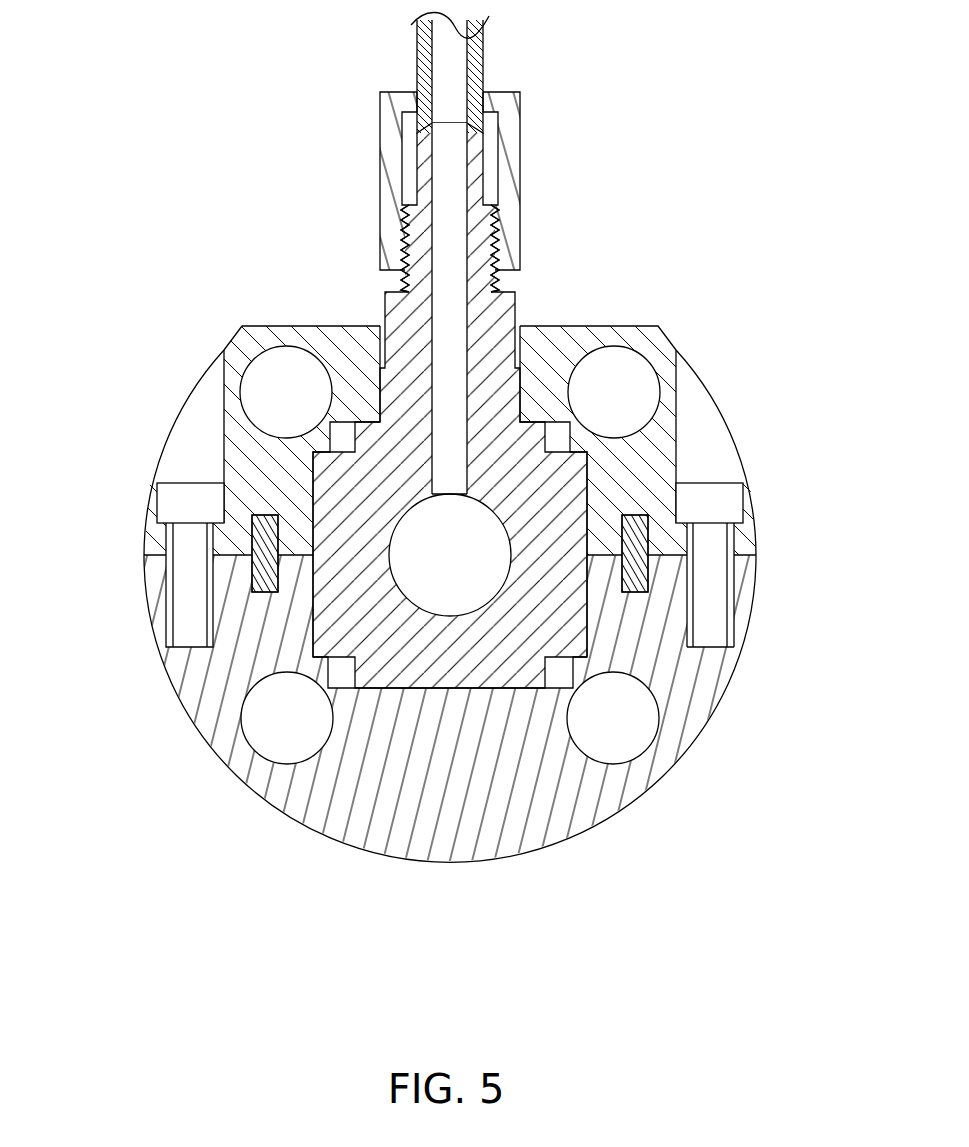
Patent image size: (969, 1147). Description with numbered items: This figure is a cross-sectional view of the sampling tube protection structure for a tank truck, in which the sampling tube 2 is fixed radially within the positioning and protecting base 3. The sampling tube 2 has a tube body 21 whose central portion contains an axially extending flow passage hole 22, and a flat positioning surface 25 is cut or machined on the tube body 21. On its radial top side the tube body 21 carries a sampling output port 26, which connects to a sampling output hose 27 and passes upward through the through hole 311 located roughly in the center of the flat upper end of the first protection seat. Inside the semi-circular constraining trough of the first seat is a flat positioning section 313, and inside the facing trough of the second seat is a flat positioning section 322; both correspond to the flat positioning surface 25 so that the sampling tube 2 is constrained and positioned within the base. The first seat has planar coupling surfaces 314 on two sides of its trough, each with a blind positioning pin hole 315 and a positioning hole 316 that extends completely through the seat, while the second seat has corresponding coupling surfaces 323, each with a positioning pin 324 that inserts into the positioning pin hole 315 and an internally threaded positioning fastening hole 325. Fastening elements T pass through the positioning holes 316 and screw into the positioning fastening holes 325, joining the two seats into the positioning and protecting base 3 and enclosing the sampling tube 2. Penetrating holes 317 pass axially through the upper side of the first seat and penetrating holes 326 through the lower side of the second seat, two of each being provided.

The sampling tube 2 is at (356, 467).
The positioning and protecting base 3 is at (460, 544).
The tube body 21 is at (342, 521).
The flow passage hole 22 is at (448, 588).
The flat positioning surface 25 is at (240, 560).
The sampling output port 26 is at (418, 238).
The sampling output hose 27 is at (390, 148).
The through hole 311 is at (495, 360).
The positioning section 313 is at (335, 427).
The coupling surface 314 is at (240, 555).
The positioning pin hole 315 is at (630, 517).
The positioning hole 316 is at (704, 416).
The penetrating hole 317 is at (620, 380).
The positioning section 322 is at (330, 688).
The coupling surface 323 is at (232, 546).
The positioning pin 324 is at (637, 580).
The positioning fastening hole 325 is at (722, 585).
The penetrating hole 326 is at (650, 740).
The fastening element T is at (745, 505).